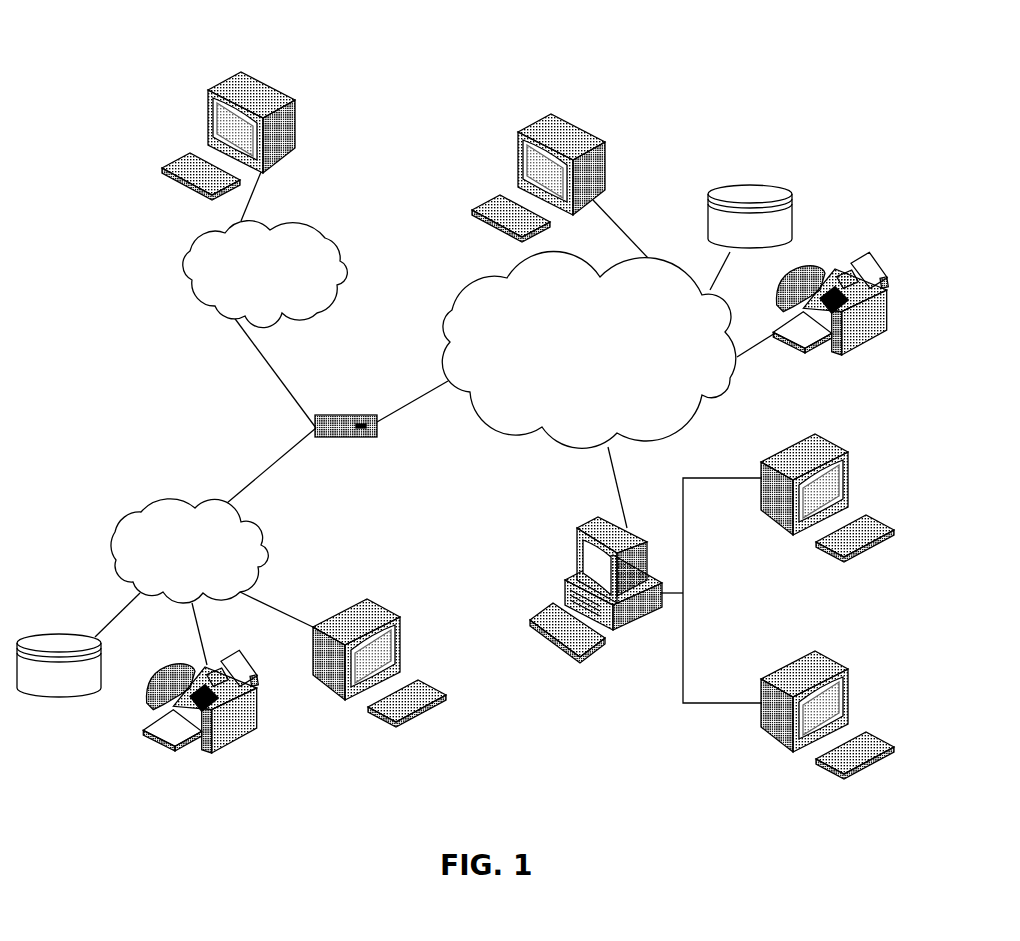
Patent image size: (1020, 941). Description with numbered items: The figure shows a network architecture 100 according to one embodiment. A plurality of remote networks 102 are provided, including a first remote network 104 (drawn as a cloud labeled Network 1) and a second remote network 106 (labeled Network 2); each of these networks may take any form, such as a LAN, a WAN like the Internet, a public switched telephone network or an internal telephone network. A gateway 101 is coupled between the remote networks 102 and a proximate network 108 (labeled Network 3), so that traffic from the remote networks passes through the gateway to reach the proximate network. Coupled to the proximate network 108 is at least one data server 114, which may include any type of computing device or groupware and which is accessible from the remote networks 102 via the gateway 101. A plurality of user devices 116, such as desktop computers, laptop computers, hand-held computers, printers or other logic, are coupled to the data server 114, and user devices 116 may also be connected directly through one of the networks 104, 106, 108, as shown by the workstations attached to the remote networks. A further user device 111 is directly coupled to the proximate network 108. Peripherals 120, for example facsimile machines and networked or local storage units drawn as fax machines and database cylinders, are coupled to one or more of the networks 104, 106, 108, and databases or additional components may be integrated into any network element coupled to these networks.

The architecture 100 is at (148, 55).
The gateway 101 is at (327, 412).
The remote networks 102 is at (175, 328).
The first remote network 104 is at (118, 525).
The second remote network 106 is at (337, 243).
The proximate network 108 is at (693, 415).
The user device 111 is at (604, 147).
The data server 114 is at (576, 544).
The user devices 116 is at (295, 110).
The peripheral 120 is at (790, 193).